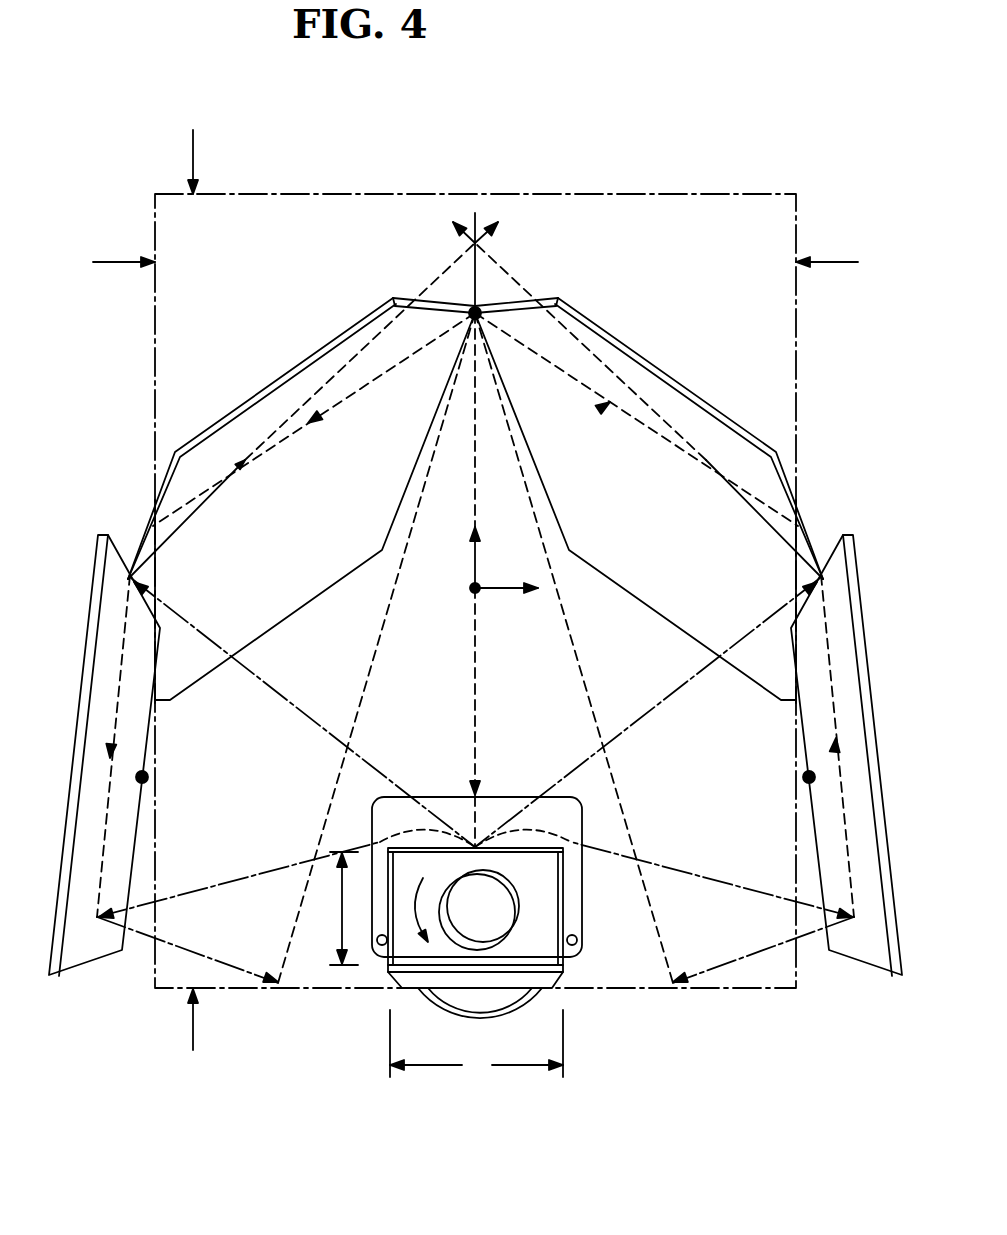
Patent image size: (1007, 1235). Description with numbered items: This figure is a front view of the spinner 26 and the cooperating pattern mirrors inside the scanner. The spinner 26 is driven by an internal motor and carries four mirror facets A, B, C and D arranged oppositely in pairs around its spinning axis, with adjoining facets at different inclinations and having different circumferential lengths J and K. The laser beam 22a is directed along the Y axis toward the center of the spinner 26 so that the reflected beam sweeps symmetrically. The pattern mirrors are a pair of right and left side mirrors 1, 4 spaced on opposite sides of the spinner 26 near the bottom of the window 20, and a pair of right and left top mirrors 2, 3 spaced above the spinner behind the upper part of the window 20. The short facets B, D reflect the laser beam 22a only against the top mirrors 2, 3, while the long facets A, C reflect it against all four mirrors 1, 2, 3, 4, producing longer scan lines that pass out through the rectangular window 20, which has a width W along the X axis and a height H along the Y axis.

The right side mirror 1 is at (867, 950).
The right top mirror 2 is at (668, 597).
The left top mirror 3 is at (288, 597).
The left side mirror 4 is at (87, 950).
The window 20 is at (677, 194).
The laser beam 22a is at (300, 716).
The spinner 26 is at (496, 920).